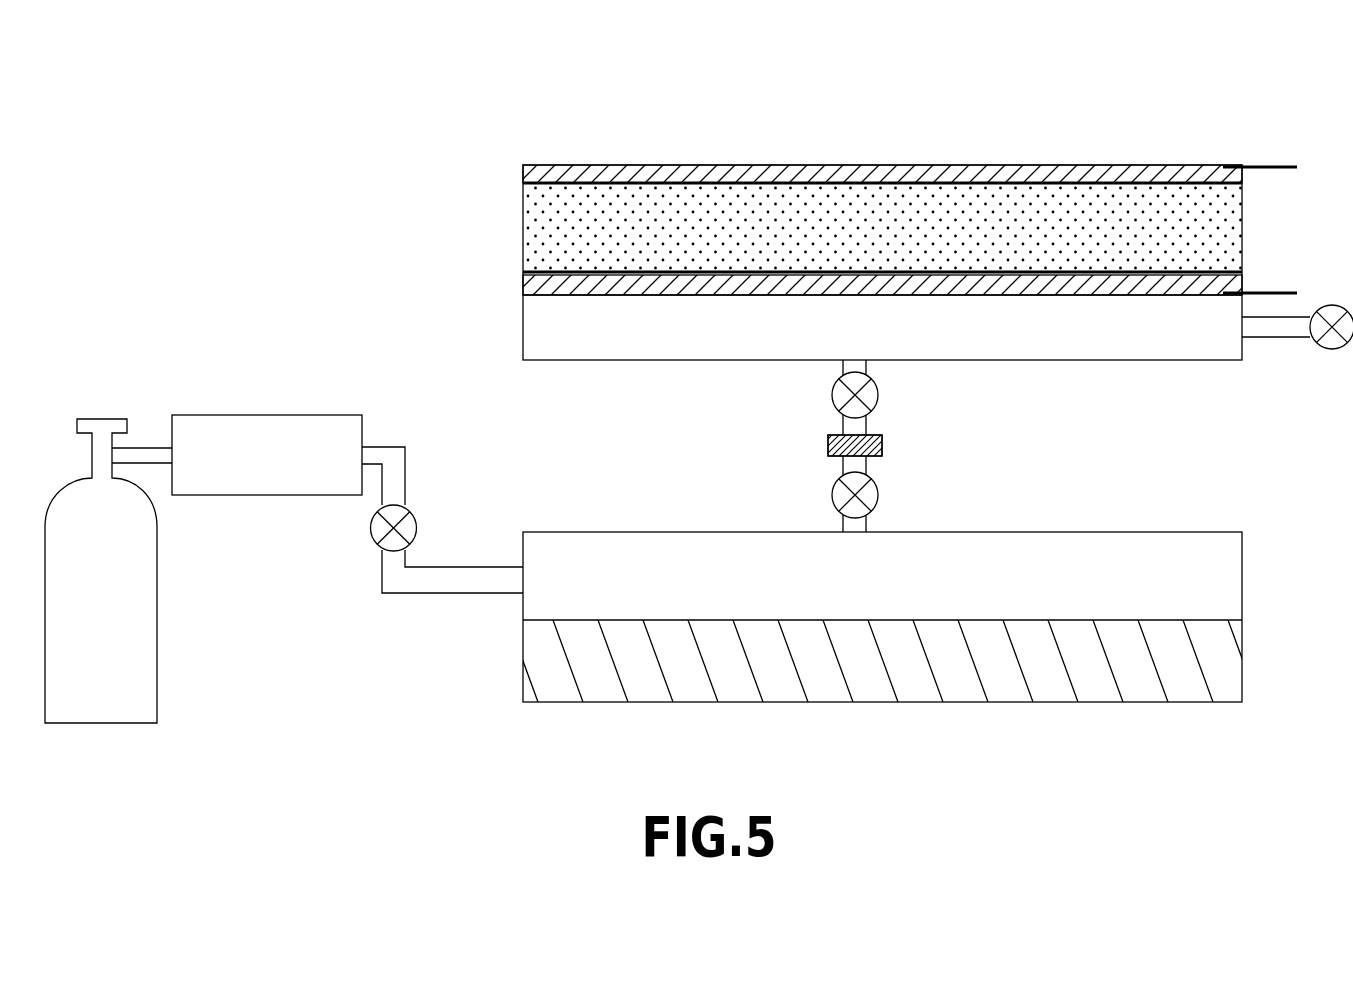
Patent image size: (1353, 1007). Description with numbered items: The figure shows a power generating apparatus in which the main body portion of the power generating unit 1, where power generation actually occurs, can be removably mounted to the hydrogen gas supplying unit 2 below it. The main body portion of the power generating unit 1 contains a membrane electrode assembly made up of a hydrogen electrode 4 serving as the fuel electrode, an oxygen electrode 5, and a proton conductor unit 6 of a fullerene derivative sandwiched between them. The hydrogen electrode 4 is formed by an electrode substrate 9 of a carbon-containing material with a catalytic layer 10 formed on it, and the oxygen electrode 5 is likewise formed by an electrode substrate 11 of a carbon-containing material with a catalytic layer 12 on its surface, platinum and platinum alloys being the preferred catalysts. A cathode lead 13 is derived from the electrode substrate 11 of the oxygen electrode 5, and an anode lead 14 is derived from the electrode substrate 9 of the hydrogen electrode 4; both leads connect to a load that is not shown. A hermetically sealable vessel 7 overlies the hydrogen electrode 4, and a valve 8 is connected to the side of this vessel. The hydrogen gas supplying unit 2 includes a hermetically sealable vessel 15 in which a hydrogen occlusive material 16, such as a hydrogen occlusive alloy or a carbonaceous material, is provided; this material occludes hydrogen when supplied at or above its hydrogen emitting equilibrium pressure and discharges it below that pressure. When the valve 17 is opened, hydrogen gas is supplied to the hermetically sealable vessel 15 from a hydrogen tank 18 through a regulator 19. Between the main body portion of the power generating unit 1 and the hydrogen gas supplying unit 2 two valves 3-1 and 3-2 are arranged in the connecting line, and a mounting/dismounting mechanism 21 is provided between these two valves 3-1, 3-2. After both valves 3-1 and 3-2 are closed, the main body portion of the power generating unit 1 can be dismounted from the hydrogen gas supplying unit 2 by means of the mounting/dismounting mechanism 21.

The main body portion of the power generating unit 1 is at (886, 244).
The hydrogen gas supplying unit 2 is at (899, 584).
The valve 3-1 is at (878, 395).
The valve 3-2 is at (878, 495).
The hydrogen electrode 4 is at (506, 286).
The oxygen electrode 5 is at (506, 167).
The proton conductor unit 6 is at (545, 229).
The hermetically sealable vessel 7 is at (1084, 361).
The valve 8 is at (1336, 350).
The electrode substrate 9 is at (1008, 290).
The catalytic layer 10 is at (612, 272).
The electrode substrate 11 is at (932, 166).
The catalytic layer 12 is at (606, 183).
The cathode lead 13 is at (1270, 165).
The anode lead 14 is at (1270, 292).
The hermetically sealable vessel 15 is at (548, 531).
The hydrogen occlusive material 16 is at (977, 620).
The valve 17 is at (417, 526).
The hydrogen tank 18 is at (158, 683).
The regulator 19 is at (337, 414).
The mounting/dismounting mechanism 21 is at (828, 446).